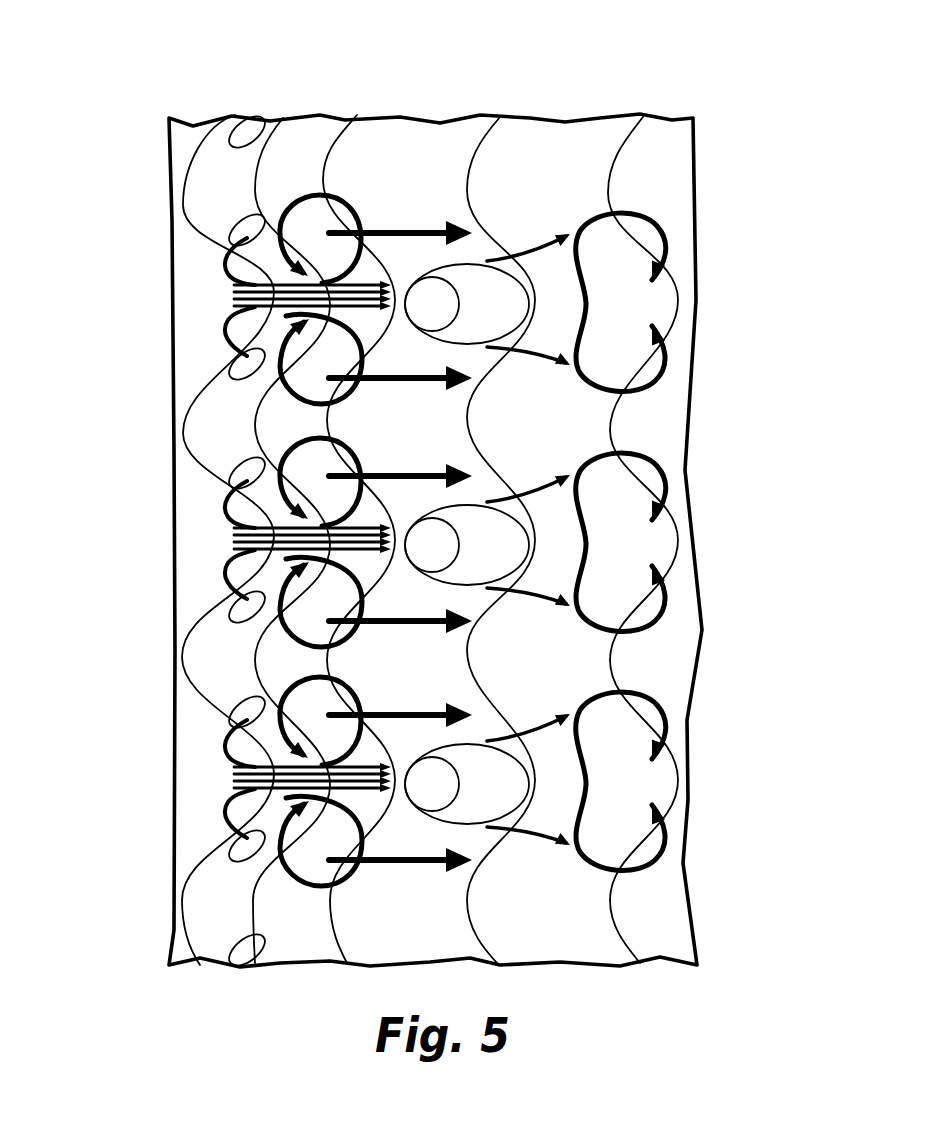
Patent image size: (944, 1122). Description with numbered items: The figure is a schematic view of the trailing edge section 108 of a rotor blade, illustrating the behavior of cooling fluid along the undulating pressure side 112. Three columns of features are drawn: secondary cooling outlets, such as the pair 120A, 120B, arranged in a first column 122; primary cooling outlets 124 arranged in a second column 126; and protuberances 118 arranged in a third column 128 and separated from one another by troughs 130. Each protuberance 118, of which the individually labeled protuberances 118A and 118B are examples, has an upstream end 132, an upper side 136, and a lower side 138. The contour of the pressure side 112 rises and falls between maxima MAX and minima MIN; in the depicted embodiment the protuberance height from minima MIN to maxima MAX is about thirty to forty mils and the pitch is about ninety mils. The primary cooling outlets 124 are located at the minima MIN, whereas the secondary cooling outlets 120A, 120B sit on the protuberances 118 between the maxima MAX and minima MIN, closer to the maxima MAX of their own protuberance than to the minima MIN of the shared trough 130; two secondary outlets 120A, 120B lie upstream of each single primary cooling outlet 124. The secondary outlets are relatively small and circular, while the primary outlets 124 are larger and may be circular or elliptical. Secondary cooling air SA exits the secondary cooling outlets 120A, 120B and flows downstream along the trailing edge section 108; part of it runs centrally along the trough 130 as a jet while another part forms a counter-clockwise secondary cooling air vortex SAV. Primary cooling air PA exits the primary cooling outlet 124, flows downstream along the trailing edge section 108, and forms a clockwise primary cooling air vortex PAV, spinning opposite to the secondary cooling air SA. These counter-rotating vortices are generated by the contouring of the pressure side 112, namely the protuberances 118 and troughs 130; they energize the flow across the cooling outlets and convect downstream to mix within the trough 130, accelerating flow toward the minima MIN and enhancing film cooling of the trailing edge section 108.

The trailing edge section 108 is at (164, 161).
The pressure side 112 is at (198, 541).
The protuberances 118 is at (610, 663).
The upper vortex region of fin 118A is at (349, 172).
The lower vortex region of fin 118B is at (343, 422).
The secondary cooling outlet 120A is at (228, 222).
The secondary cooling outlet 120B is at (228, 365).
The first column 122 is at (252, 90).
The primary cooling outlets 124 is at (436, 266).
The second column 126 is at (437, 92).
The third column 128 is at (565, 92).
The troughs 130 is at (678, 300).
The upstream end 132 is at (182, 663).
The upper side 136 is at (490, 618).
The lower side 138 is at (493, 710).
The secondary cooling air SA is at (427, 224).
The secondary cooling air vortex SAV is at (357, 211).
The primary cooling air PA is at (525, 257).
The primary cooling air vortex PAV is at (600, 210).
The minima MIN is at (537, 543).
The maxima MAX is at (465, 663).